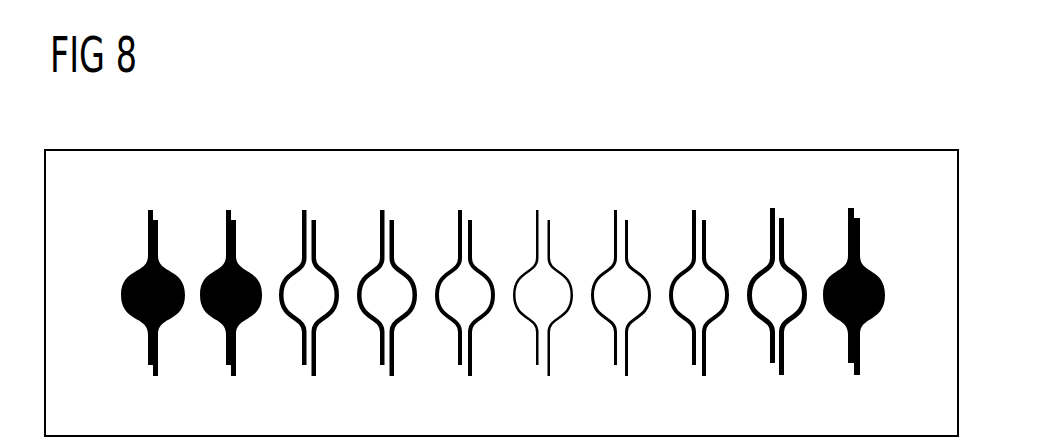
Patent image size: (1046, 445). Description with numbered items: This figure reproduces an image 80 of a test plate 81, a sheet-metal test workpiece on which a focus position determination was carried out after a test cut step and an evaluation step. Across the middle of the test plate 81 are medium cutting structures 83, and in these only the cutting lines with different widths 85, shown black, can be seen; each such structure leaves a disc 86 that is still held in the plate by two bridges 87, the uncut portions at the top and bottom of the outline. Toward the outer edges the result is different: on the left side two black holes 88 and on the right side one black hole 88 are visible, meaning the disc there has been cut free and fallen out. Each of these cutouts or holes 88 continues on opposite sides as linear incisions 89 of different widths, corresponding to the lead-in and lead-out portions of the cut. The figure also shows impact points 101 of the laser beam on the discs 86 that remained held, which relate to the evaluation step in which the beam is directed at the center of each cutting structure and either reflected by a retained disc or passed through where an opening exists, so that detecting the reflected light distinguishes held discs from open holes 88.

The image 80 is at (353, 148).
The test plate 81 is at (736, 230).
The medium cutting structures 83 is at (554, 172).
The cutting lines with different widths 85 is at (467, 365).
The disc 86 is at (377, 282).
The bridges 87 is at (399, 211).
The holes 88 is at (139, 295).
The linear incisions 89 is at (148, 232).
The impact points 101 is at (317, 305).